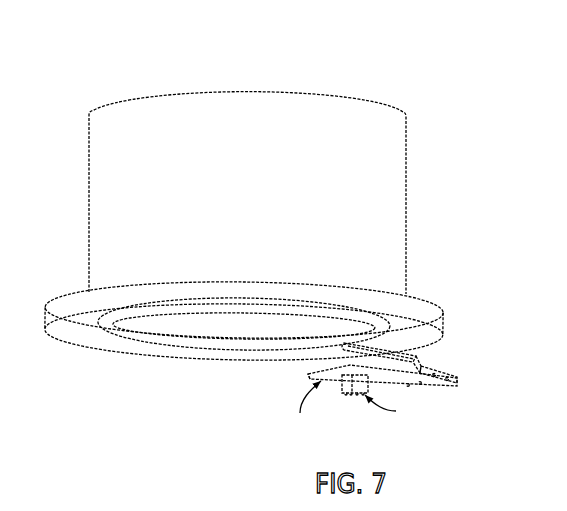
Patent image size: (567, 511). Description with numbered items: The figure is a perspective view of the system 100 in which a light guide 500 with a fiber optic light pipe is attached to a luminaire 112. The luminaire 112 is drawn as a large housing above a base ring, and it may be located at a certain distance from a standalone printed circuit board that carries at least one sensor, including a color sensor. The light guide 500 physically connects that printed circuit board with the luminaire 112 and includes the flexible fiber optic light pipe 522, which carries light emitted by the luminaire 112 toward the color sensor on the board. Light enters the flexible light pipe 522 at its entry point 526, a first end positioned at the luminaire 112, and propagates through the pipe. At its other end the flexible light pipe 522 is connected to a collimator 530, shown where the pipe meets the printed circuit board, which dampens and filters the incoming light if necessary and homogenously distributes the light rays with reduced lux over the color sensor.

The system 100 is at (68, 60).
The luminaire 112 is at (410, 214).
The light guide 500 is at (387, 345).
The flexible fiber optic light pipe 522 is at (399, 350).
The entry point 526 is at (355, 340).
The collimator 530 is at (445, 370).